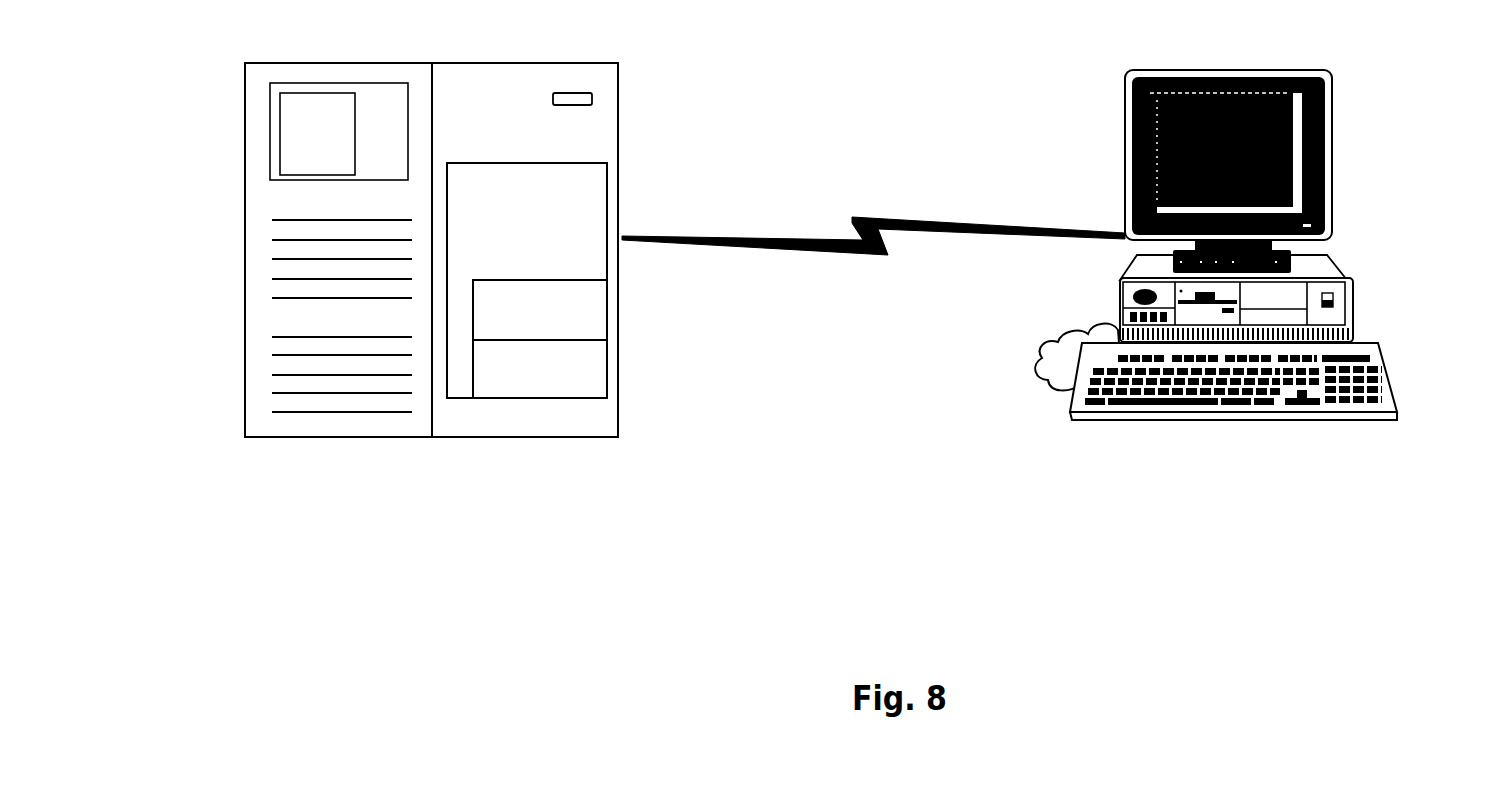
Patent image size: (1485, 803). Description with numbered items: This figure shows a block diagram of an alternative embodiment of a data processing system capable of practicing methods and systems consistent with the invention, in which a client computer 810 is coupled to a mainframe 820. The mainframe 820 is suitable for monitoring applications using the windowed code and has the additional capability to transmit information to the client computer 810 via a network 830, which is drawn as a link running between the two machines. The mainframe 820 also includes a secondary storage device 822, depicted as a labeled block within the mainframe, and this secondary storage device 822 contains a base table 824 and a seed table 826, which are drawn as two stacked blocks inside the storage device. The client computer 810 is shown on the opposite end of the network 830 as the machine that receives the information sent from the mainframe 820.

The client computer 810 is at (1365, 120).
The mainframe 820 is at (245, 127).
The secondary storage device 822 is at (607, 205).
The base table 824 is at (607, 332).
The seed table 826 is at (607, 385).
The network 830 is at (897, 192).